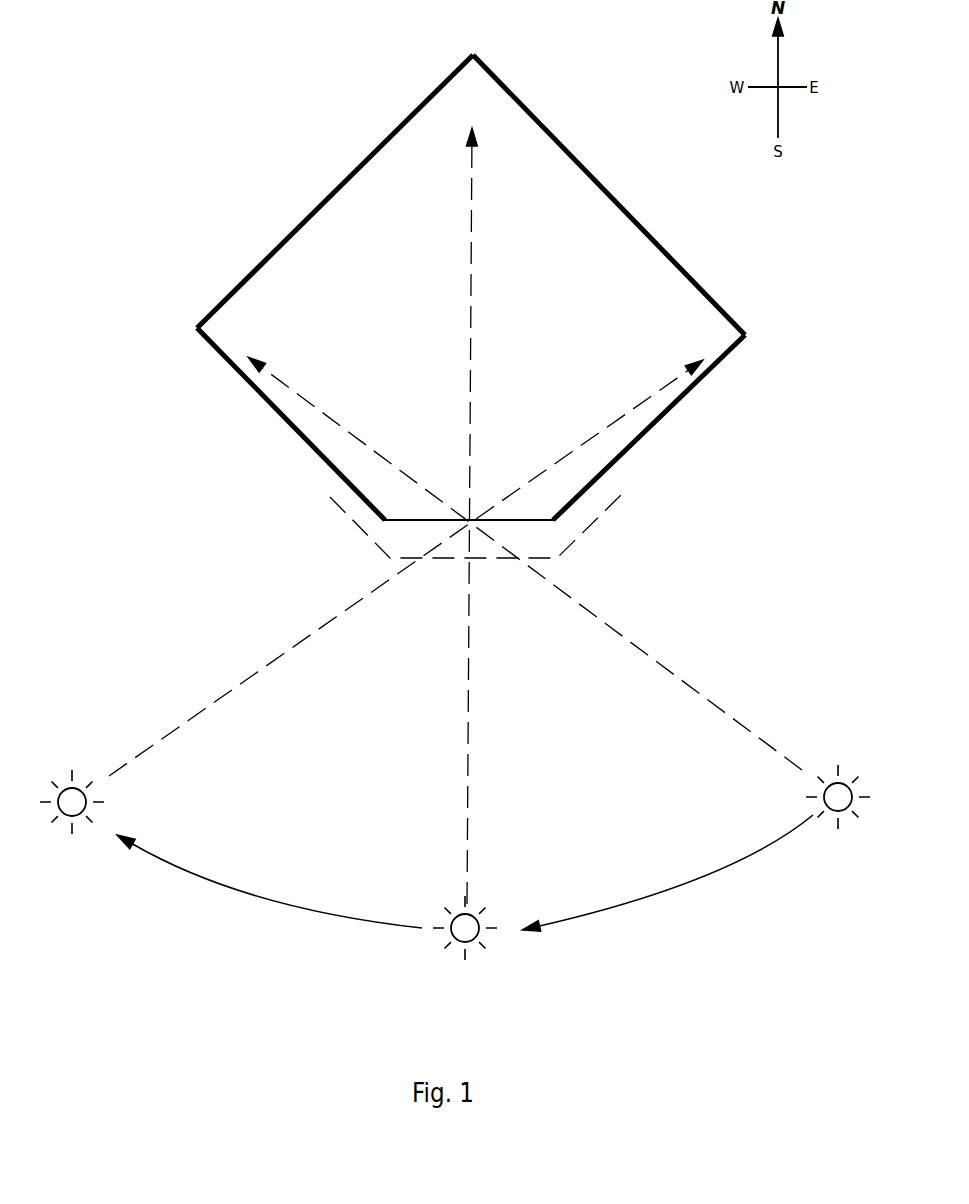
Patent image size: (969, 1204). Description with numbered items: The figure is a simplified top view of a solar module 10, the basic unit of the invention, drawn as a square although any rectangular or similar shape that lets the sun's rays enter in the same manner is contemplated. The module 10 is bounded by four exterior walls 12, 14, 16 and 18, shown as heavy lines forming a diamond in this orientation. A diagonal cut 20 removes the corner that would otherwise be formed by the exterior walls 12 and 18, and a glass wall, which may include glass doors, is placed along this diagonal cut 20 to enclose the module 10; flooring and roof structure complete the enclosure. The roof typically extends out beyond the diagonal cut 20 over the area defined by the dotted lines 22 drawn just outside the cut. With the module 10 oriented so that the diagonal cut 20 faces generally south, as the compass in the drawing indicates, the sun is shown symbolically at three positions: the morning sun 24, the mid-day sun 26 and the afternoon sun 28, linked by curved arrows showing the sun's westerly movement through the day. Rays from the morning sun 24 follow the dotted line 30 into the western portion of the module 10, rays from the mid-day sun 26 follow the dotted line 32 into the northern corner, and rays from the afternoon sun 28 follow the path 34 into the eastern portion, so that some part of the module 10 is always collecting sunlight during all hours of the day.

The solar module 10 is at (471, 303).
The exterior wall 12 is at (624, 456).
The exterior wall 14 is at (646, 230).
The exterior wall 16 is at (360, 168).
The exterior wall 18 is at (298, 436).
The diagonal cut 20 is at (418, 522).
The dotted lines 22 is at (440, 560).
The morning sun 24 is at (787, 800).
The mid-day sun 26 is at (501, 942).
The afternoon sun 28 is at (140, 789).
The dotted line 30 is at (636, 645).
The dotted line 32 is at (467, 752).
The path 34 is at (258, 663).